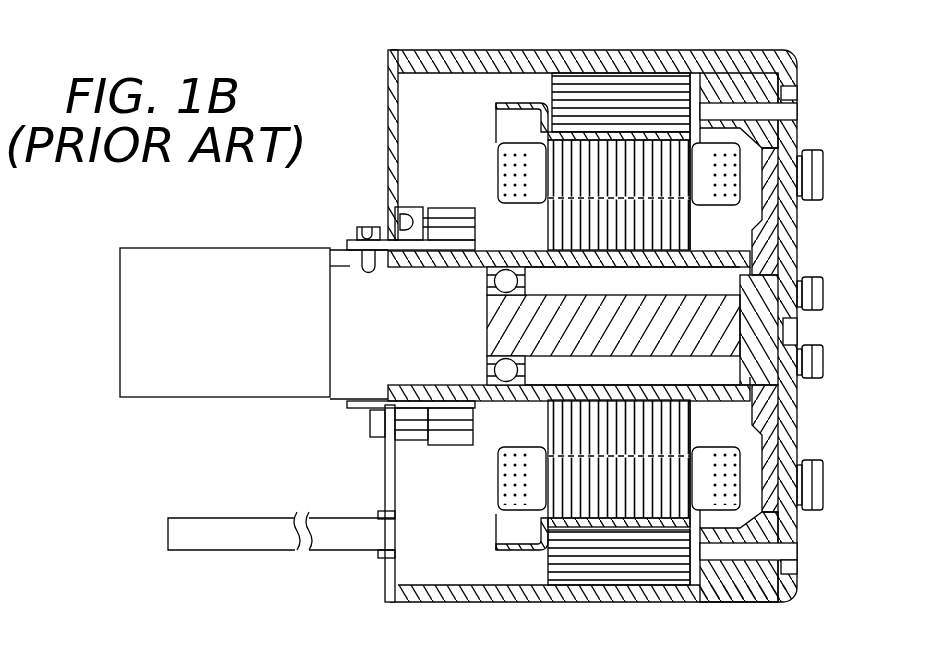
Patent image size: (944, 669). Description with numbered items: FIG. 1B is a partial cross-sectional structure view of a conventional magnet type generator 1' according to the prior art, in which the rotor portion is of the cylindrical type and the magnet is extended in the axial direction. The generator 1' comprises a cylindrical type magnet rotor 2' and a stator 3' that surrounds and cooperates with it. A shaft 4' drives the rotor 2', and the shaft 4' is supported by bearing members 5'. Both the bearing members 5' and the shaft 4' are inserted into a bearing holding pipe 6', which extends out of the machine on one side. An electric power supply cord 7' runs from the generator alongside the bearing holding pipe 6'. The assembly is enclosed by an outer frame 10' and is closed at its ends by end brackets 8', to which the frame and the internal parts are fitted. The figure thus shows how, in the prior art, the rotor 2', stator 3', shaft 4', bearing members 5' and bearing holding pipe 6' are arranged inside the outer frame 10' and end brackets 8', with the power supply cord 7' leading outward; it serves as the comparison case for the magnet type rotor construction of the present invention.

The conventional magnet type generator 1' is at (775, 337).
The cylindrical type magnet rotor 2' is at (619, 298).
The stator 3' is at (598, 299).
The shaft 4' is at (774, 342).
The bearing members 5' is at (802, 330).
The bearing holding pipe 6' is at (297, 336).
The electric power supply cord 7' is at (281, 558).
The end brackets 8' is at (367, 326).
The outer frame 10' is at (593, 307).